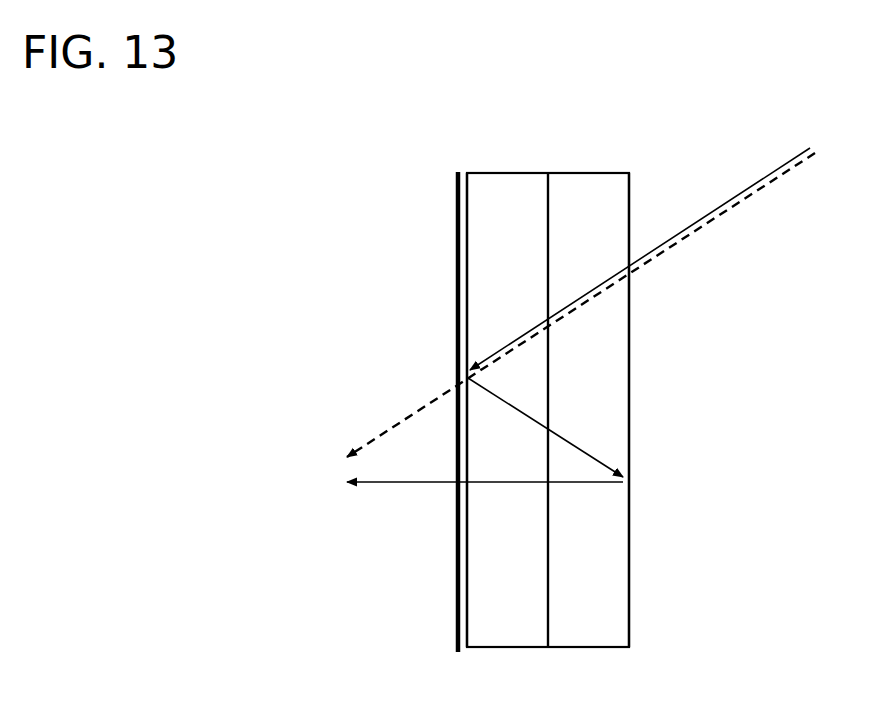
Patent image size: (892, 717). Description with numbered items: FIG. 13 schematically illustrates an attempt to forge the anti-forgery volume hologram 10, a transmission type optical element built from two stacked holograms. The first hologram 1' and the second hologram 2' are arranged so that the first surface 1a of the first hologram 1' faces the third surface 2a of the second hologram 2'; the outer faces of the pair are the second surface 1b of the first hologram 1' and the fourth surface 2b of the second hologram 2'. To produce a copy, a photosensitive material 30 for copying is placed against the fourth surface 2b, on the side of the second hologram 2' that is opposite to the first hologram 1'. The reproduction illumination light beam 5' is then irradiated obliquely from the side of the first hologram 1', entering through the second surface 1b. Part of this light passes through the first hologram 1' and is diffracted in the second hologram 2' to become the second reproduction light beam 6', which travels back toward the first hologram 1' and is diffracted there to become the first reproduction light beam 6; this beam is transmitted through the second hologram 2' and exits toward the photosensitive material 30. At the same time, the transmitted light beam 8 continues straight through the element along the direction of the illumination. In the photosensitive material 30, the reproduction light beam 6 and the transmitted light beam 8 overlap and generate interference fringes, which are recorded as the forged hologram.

The anti-forgery volume hologram 10 is at (540, 150).
The photosensitive material 30 is at (457, 282).
The second hologram 2' is at (445, 410).
The first hologram 1' is at (643, 410).
The third surface 2a is at (548, 632).
The first surface 1a is at (548, 603).
The fourth surface 2b is at (466, 622).
The second surface 1b is at (629, 628).
The reproduction illumination light beam 5' is at (640, 250).
The transmitted light beam 8 is at (683, 240).
The second reproduction light beam 6' is at (564, 423).
The first reproduction light beam 6 is at (485, 446).